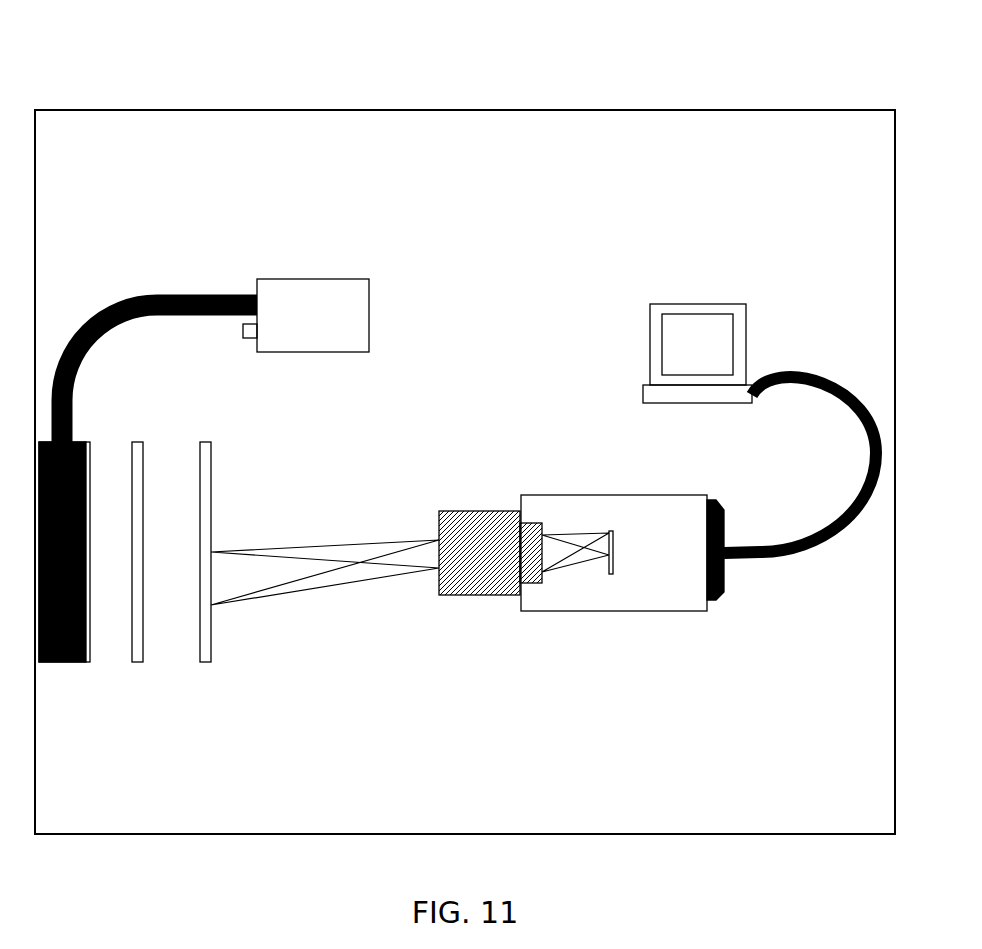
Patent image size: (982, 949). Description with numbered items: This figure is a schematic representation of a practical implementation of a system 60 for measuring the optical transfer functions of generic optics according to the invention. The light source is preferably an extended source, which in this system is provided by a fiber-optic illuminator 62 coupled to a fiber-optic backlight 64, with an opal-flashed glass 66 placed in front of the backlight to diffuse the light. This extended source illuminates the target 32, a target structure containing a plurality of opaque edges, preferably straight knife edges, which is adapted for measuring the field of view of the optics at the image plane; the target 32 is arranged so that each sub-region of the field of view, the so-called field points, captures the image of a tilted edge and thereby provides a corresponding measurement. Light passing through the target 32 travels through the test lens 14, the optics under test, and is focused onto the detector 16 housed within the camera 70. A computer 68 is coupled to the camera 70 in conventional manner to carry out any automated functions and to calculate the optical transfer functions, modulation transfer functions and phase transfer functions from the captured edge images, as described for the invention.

The system 60 is at (542, 110).
The fiber-optic illuminator 62 is at (312, 277).
The fiber-optic backlight 64 is at (58, 663).
The opal-flashed glass 66 is at (140, 663).
The target structure 32 is at (214, 643).
The test lens 14 is at (462, 597).
The detector 16 is at (608, 533).
The computer 68 is at (745, 302).
The camera 70 is at (672, 613).